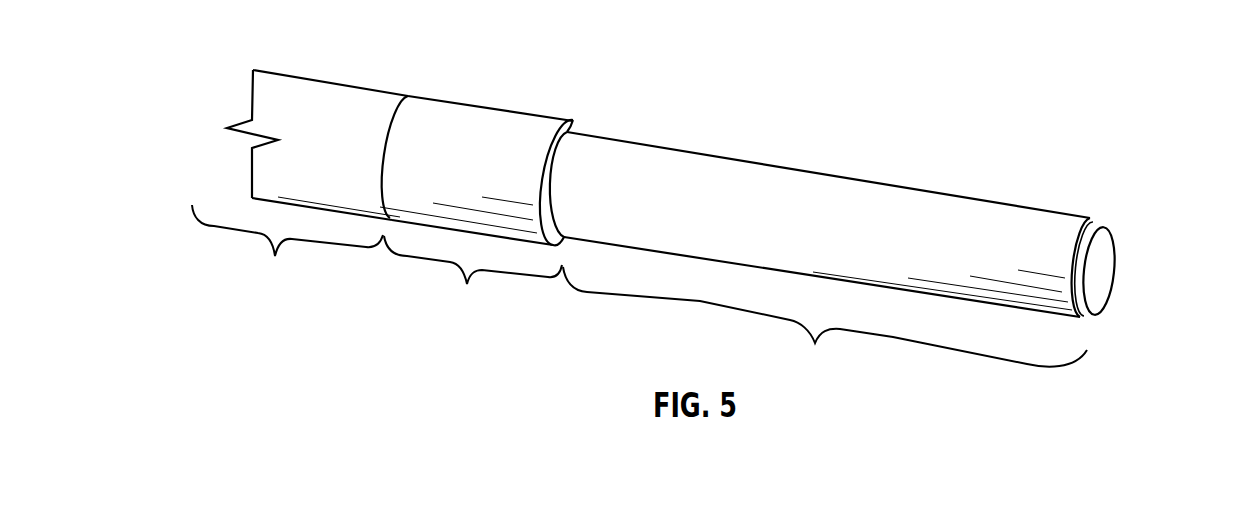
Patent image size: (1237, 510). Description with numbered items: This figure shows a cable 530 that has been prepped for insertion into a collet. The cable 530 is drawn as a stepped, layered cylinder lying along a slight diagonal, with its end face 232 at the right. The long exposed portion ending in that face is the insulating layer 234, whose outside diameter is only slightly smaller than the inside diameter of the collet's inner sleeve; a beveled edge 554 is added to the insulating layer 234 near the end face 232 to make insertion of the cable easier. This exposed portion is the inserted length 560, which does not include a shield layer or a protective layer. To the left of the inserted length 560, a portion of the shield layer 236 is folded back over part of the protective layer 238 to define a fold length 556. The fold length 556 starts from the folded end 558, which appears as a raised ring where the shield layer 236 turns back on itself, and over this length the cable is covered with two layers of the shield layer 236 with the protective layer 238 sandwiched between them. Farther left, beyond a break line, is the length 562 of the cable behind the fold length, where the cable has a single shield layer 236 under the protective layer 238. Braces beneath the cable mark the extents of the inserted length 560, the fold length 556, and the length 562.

The end face 232 is at (1112, 268).
The insulating layer 234 is at (933, 203).
The shield layer 236 is at (502, 117).
The protective layer 238 is at (340, 87).
The cable 530 is at (851, 89).
The beveled edge 554 is at (1098, 220).
The fold length 556 is at (473, 281).
The folded end 558 is at (572, 130).
The inserted length 560 is at (825, 323).
The length of the cable behind the fold length 562 is at (287, 249).